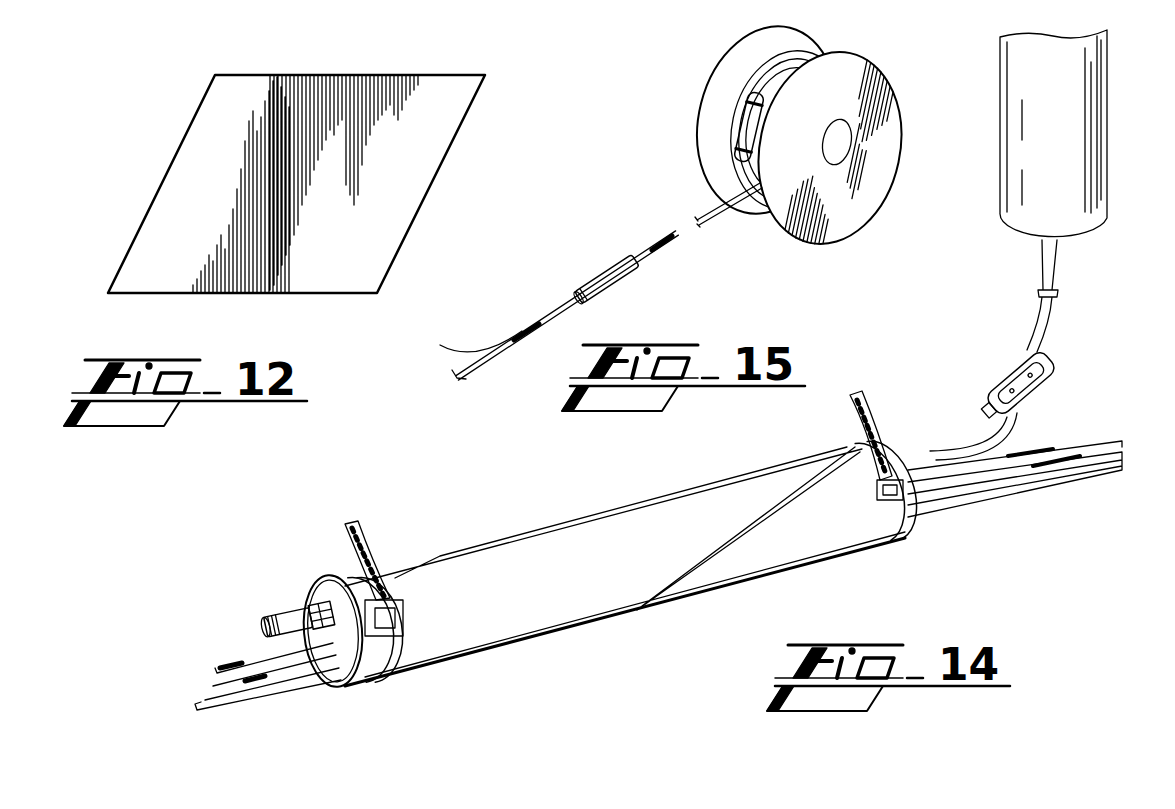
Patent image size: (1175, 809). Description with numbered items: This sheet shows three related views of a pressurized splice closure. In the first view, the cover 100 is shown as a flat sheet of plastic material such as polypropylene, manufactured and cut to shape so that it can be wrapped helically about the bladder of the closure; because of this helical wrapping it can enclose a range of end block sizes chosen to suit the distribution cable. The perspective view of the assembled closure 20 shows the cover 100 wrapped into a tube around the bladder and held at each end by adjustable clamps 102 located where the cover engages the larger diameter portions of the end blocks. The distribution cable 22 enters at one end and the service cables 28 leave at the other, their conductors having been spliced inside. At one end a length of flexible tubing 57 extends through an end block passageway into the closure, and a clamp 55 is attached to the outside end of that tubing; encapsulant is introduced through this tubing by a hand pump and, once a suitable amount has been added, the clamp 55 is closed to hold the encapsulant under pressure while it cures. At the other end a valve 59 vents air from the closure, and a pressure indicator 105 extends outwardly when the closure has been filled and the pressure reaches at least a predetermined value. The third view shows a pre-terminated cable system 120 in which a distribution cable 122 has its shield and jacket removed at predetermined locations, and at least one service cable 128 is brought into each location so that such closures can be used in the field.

In FIG. 12, the cover 100 is at (178, 172).
In FIG. 14, the cover 100 is at (553, 547).
In FIG. 15, the cable system 120 is at (651, 191).
In FIG. 15, the distribution cable 122 is at (718, 217).
In FIG. 15, the service cable 128 is at (670, 232).
In FIG. 15, the closure 20 is at (597, 275).
In FIG. 14, the clamp 55 is at (1013, 360).
In FIG. 14, the flexible tubing 57 is at (937, 440).
In FIG. 14, the adjustable clamps 102 is at (370, 542).
In FIG. 14, the distribution cable 22 is at (223, 700).
In FIG. 14, the service cables 28 is at (247, 680).
In FIG. 14, the pressure indicator 105 is at (267, 625).
In FIG. 14, the valve 59 is at (287, 617).